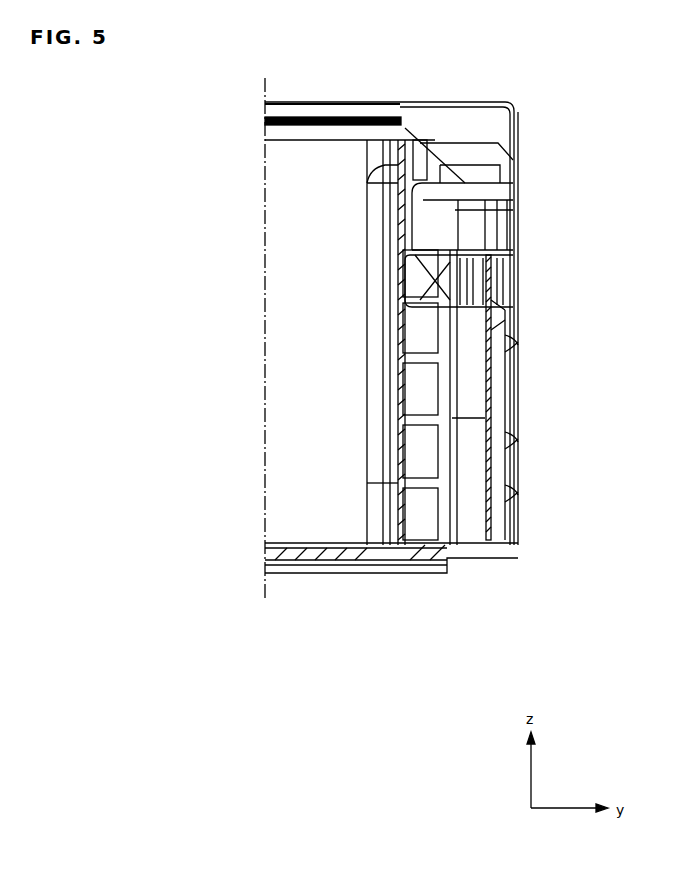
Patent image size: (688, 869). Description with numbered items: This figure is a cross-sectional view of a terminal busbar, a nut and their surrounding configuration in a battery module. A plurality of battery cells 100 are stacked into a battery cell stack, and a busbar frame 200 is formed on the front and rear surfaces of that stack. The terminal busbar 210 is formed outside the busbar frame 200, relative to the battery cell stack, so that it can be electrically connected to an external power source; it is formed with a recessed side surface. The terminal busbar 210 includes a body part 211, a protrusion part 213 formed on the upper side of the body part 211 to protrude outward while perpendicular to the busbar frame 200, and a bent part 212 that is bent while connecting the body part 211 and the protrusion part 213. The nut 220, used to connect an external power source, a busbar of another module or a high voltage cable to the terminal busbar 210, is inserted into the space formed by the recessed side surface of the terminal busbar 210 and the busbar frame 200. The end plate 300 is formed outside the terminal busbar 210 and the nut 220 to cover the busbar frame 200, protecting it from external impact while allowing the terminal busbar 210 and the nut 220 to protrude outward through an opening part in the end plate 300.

The battery cell 100 is at (291, 392).
The busbar frame 200 is at (400, 330).
The terminal busbar 210 is at (119, 93).
The body part 211 is at (445, 505).
The bent part 212 is at (400, 228).
The protrusion part 213 is at (400, 130).
The nut 220 is at (440, 232).
The end plate 300 is at (513, 253).